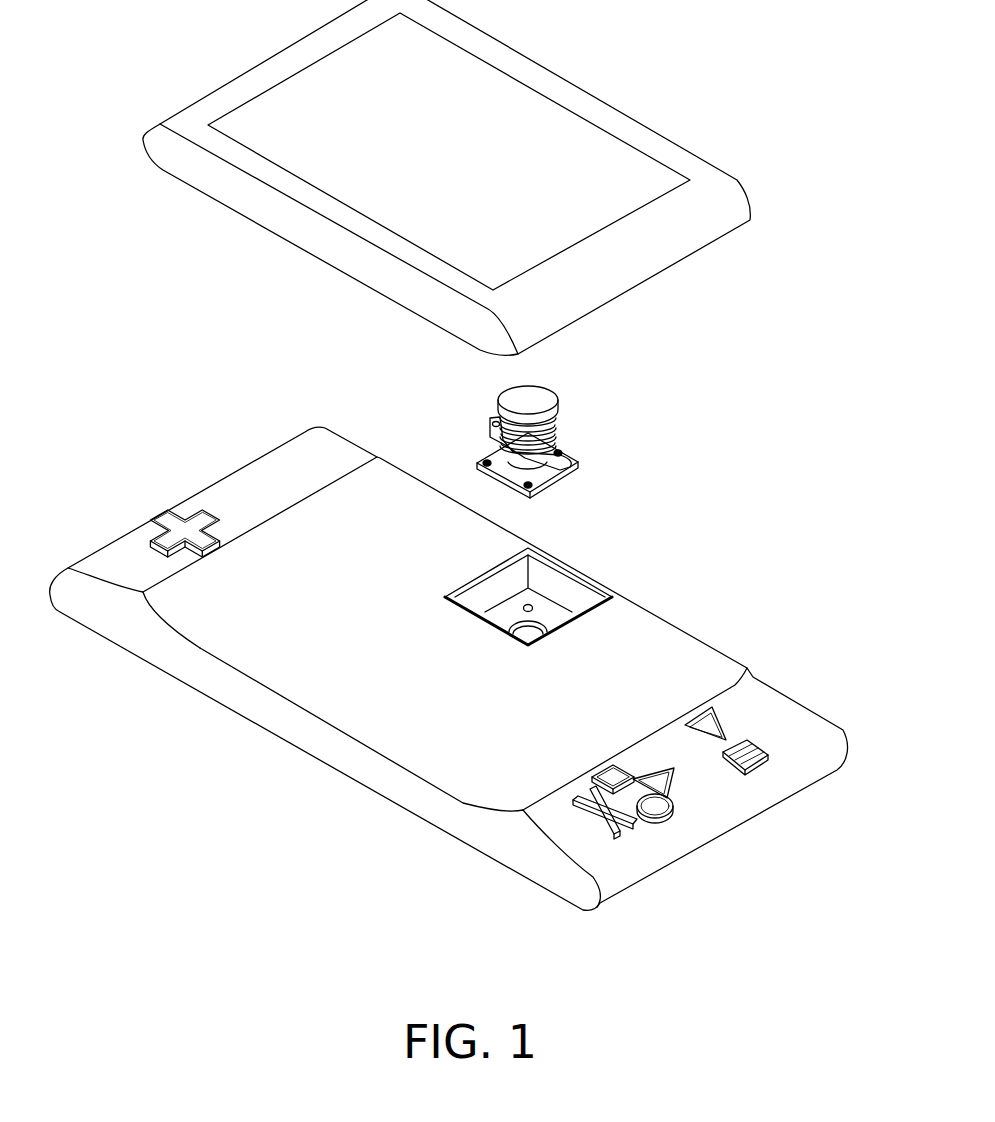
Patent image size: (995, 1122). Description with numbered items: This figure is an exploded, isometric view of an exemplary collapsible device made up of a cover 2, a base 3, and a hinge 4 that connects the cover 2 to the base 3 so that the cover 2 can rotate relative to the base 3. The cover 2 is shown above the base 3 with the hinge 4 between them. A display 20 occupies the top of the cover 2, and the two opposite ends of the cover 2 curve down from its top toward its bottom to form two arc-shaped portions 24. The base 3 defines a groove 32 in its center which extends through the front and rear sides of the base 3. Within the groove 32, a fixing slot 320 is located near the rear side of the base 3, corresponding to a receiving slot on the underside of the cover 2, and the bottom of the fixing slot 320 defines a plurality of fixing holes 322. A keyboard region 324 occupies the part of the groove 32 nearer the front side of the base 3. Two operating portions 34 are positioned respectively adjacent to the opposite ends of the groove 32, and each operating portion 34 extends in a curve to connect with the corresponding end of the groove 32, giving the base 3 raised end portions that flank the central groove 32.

The cover 2 is at (449, 177).
The display 20 is at (513, 128).
The arc-shaped portions 24 is at (610, 275).
The base 3 is at (449, 653).
The hinge 4 is at (573, 420).
The groove 32 is at (643, 648).
The fixing slot 320 is at (555, 612).
The fixing holes 322 is at (528, 604).
The keyboard region 324 is at (317, 650).
The operating portions 34 is at (765, 715).